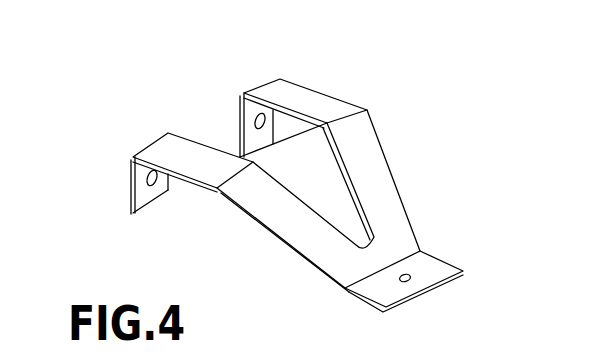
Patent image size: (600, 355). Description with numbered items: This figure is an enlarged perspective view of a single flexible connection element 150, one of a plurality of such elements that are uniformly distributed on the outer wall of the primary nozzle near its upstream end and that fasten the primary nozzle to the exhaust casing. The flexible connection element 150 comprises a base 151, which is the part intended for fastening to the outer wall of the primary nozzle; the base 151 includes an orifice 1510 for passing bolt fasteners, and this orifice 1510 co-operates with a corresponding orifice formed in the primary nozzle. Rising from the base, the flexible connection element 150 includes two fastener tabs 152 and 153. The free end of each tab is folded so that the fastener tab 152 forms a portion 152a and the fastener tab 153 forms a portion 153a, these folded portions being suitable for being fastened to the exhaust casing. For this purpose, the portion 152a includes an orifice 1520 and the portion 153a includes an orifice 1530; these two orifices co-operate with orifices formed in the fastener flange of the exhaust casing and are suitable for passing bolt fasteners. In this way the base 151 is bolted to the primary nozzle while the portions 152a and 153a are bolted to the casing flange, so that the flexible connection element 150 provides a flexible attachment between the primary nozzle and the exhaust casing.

The flexible connection element 150 is at (393, 146).
The base 151 is at (435, 284).
The orifice 1510 is at (407, 277).
The fastener tab 152 is at (282, 99).
The portion 152a is at (252, 126).
The orifice 1520 is at (272, 125).
The fastener tab 153 is at (148, 165).
The portion 153a is at (150, 187).
The orifice 1530 is at (165, 191).